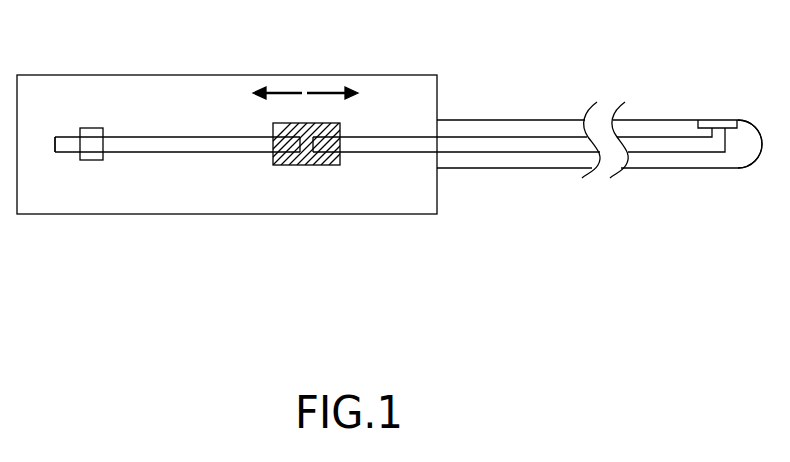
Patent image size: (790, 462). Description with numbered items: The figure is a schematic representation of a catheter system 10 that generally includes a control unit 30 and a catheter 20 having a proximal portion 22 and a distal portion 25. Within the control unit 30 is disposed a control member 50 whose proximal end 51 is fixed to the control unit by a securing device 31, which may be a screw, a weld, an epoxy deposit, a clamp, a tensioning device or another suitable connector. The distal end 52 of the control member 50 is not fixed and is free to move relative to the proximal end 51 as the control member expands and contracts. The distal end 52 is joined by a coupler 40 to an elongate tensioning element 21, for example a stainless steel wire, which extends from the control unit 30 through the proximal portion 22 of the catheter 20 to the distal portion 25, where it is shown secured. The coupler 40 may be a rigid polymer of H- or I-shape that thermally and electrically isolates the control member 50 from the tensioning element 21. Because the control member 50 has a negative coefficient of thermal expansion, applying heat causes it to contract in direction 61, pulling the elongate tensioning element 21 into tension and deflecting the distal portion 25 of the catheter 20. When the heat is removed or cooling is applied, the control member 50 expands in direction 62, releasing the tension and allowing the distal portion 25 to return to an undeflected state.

The catheter system 10 is at (135, 320).
The catheter 20 is at (583, 245).
The elongate tensioning element 21 is at (408, 153).
The proximal portion 22 is at (477, 119).
The distal portion 25 is at (710, 168).
The control unit 30 is at (148, 214).
The securing device 31 is at (89, 161).
The coupler 40 is at (308, 165).
The control member 50 is at (180, 137).
The proximal end 51 is at (71, 136).
The distal end 52 is at (293, 147).
The direction 61 is at (272, 108).
The direction 62 is at (337, 108).